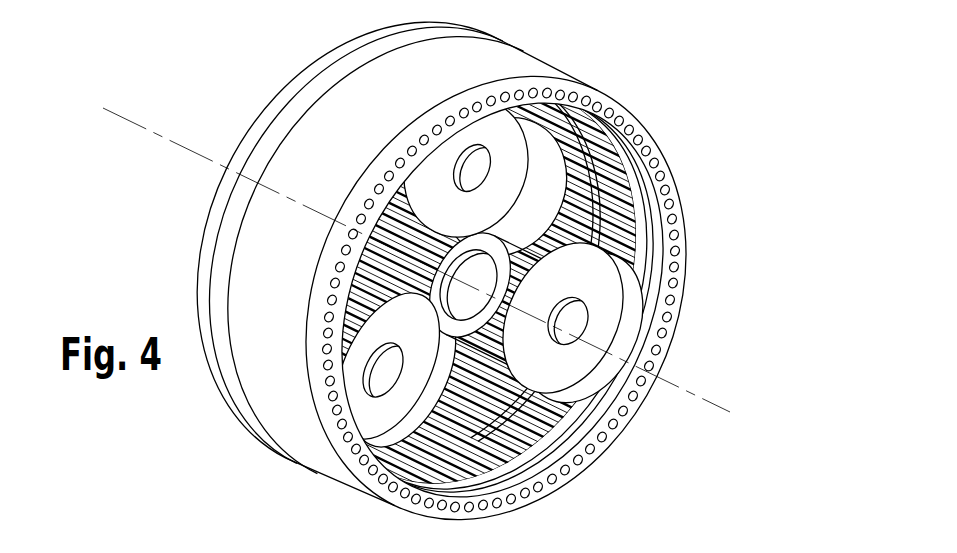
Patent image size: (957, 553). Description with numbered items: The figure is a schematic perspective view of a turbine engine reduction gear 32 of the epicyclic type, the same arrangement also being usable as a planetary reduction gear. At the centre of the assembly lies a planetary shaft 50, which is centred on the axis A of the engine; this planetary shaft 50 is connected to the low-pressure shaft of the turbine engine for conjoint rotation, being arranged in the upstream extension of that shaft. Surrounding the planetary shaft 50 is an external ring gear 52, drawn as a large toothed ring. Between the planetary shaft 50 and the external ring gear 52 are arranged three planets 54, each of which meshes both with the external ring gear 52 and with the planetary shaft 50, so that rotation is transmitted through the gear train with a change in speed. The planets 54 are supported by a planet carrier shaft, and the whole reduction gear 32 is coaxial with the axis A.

The epicyclic reduction gear 32 is at (686, 136).
The planetary shaft 50 is at (450, 327).
The external ring gear 52 is at (607, 173).
The planets 54 is at (462, 298).
The axis A is at (690, 400).